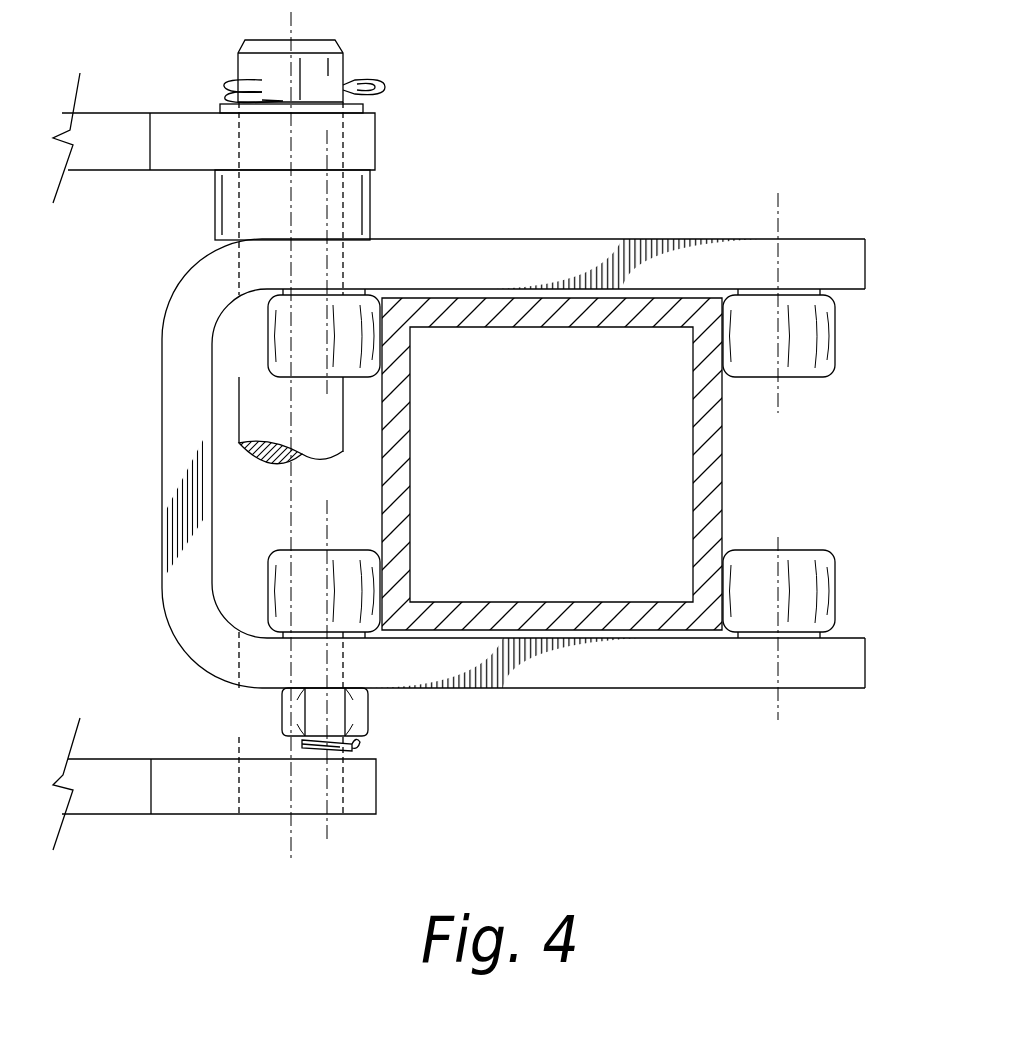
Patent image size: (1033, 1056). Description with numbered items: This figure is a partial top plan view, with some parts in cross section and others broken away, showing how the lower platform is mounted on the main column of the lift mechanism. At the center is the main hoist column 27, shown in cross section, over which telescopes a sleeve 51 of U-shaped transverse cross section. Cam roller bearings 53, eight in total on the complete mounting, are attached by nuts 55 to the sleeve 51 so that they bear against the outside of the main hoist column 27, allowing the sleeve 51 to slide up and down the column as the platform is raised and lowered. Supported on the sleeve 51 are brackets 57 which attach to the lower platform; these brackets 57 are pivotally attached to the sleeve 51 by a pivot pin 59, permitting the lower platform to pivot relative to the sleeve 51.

The main hoist column 27 is at (712, 465).
The sleeve 51 is at (556, 262).
The cam roller bearings 53 is at (367, 357).
The nuts 55 is at (778, 200).
The brackets 57 is at (115, 152).
The pivot pin 59 is at (265, 425).